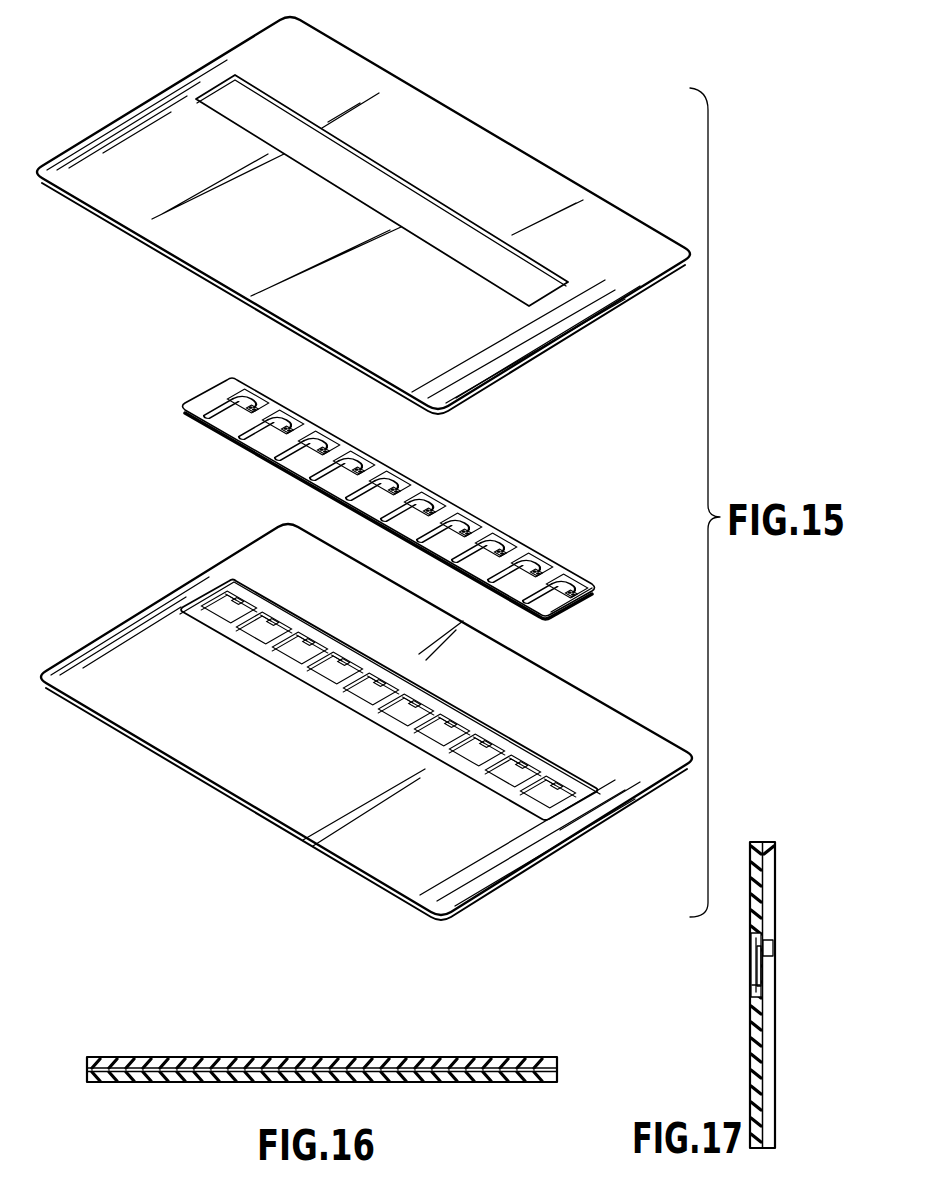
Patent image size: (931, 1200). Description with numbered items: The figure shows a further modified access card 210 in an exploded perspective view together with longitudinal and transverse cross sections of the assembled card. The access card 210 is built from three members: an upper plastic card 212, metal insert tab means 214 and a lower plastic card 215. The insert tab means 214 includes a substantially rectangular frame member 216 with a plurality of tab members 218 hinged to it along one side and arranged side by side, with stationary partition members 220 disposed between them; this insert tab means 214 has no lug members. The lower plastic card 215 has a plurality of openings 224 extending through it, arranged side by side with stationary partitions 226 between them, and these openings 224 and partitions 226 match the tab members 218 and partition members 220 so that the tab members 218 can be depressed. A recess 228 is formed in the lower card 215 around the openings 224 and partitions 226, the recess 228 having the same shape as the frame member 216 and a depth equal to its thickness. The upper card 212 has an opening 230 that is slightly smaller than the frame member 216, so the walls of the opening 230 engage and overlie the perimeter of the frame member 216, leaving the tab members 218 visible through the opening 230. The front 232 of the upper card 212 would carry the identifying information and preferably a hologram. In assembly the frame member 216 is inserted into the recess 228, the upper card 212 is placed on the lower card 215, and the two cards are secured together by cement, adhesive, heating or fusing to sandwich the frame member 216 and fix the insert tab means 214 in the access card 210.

In FIG. 15, the access card 210 is at (585, 140).
In FIG. 16, the access card 210 is at (252, 1052).
In FIG. 17, the access card 210 is at (780, 886).
In FIG. 15, the upper plastic card 212 is at (433, 136).
In FIG. 15, the metal insert tab means 214 is at (532, 535).
In FIG. 16, the metal insert tab means 214 is at (333, 1068).
In FIG. 17, the metal insert tab means 214 is at (758, 958).
In FIG. 15, the lower plastic card 215 is at (549, 686).
In FIG. 16, the lower plastic card 215 is at (212, 1085).
In FIG. 17, the lower plastic card 215 is at (753, 905).
In FIG. 15, the frame member 216 is at (587, 583).
In FIG. 15, the tab members 218 is at (228, 440).
In FIG. 15, the stationary partition members 220 is at (240, 393).
In FIG. 17, the stationary partition members 220 is at (767, 982).
In FIG. 15, the openings 224 is at (218, 609).
In FIG. 15, the stationary partitions 226 is at (237, 592).
In FIG. 17, the stationary partitions 226 is at (753, 983).
In FIG. 15, the recess 228 is at (587, 800).
In FIG. 16, the recess 228 is at (515, 1068).
In FIG. 15, the opening 230 is at (225, 98).
In FIG. 17, the opening 230 is at (767, 947).
In FIG. 15, the front 232 is at (490, 365).
In FIG. 17, the front 232 is at (777, 870).